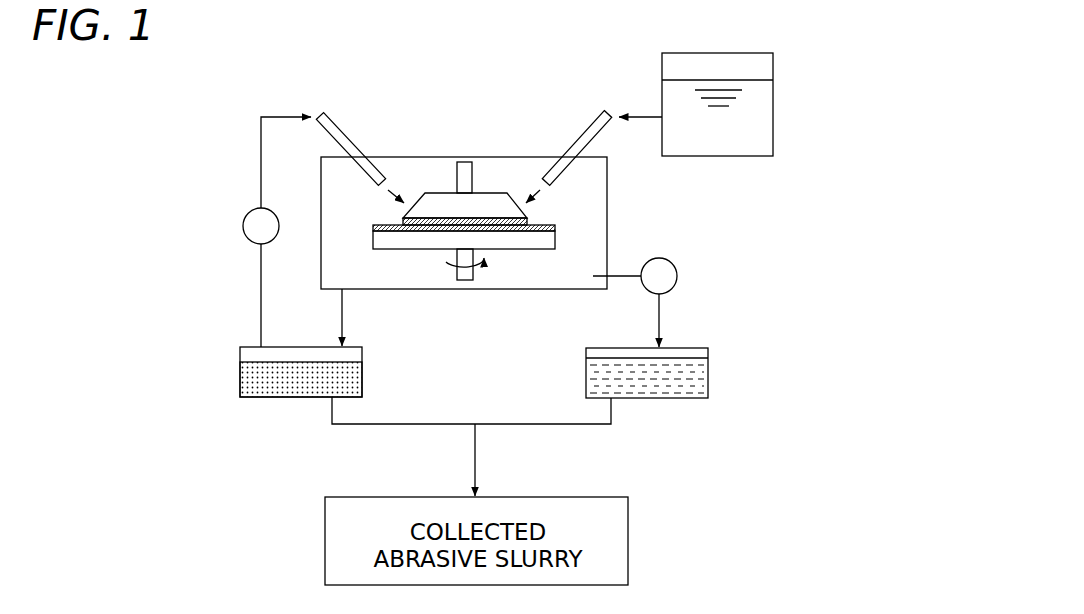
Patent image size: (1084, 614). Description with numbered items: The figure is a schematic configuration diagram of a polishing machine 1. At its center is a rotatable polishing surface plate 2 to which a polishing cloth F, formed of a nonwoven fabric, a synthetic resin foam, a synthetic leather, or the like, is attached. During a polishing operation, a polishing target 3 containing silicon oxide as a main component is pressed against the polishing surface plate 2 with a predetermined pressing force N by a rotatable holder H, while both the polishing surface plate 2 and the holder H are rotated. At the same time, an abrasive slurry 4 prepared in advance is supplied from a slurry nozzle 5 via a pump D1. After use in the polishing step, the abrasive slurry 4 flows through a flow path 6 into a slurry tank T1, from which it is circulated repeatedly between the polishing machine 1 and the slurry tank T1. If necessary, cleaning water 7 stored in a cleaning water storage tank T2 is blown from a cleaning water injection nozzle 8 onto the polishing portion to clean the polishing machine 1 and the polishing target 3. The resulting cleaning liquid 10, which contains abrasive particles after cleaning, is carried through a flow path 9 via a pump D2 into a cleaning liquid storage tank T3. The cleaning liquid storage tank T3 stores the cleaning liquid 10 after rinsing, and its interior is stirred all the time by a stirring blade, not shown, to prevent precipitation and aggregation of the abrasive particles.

The polishing machine 1 is at (476, 66).
The polishing surface plate 2 is at (556, 238).
The polishing target 3 is at (541, 176).
The abrasive slurry 4 is at (243, 368).
The slurry nozzle 5 is at (347, 138).
The flow path 6 is at (346, 311).
The cleaning water 7 is at (737, 123).
The cleaning water injection nozzle 8 is at (591, 132).
The flow path 9 is at (663, 302).
The cleaning liquid 10 is at (690, 375).
The pressing force N is at (464, 175).
The holder H is at (486, 190).
The polishing cloth F is at (378, 226).
The pump D1 is at (243, 218).
The pump D2 is at (673, 264).
The slurry tank T1 is at (263, 383).
The cleaning water storage tank T2 is at (774, 142).
The cleaning liquid storage tank T3 is at (700, 382).